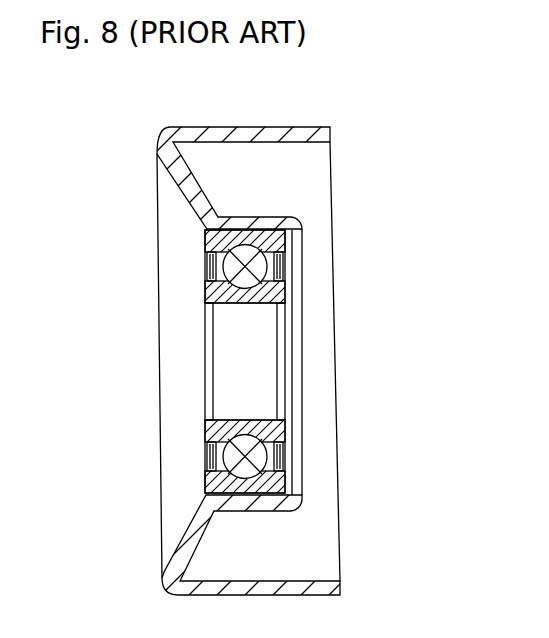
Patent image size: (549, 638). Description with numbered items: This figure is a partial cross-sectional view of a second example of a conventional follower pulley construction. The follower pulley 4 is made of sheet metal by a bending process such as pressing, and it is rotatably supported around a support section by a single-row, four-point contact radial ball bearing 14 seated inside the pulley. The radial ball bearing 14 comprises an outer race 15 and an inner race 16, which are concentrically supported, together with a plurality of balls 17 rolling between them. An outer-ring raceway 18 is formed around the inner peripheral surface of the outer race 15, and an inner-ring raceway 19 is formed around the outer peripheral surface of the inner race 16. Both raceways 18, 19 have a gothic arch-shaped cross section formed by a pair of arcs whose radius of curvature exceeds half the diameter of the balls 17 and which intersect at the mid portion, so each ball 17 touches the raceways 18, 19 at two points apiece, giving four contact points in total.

The follower pulley 4 is at (247, 128).
The radial ball bearing 14 is at (304, 260).
The outer race 15 is at (207, 240).
The inner race 16 is at (207, 295).
The balls 17 is at (264, 268).
The outer-ring raceway 18 is at (260, 486).
The inner-ring raceway 19 is at (249, 290).